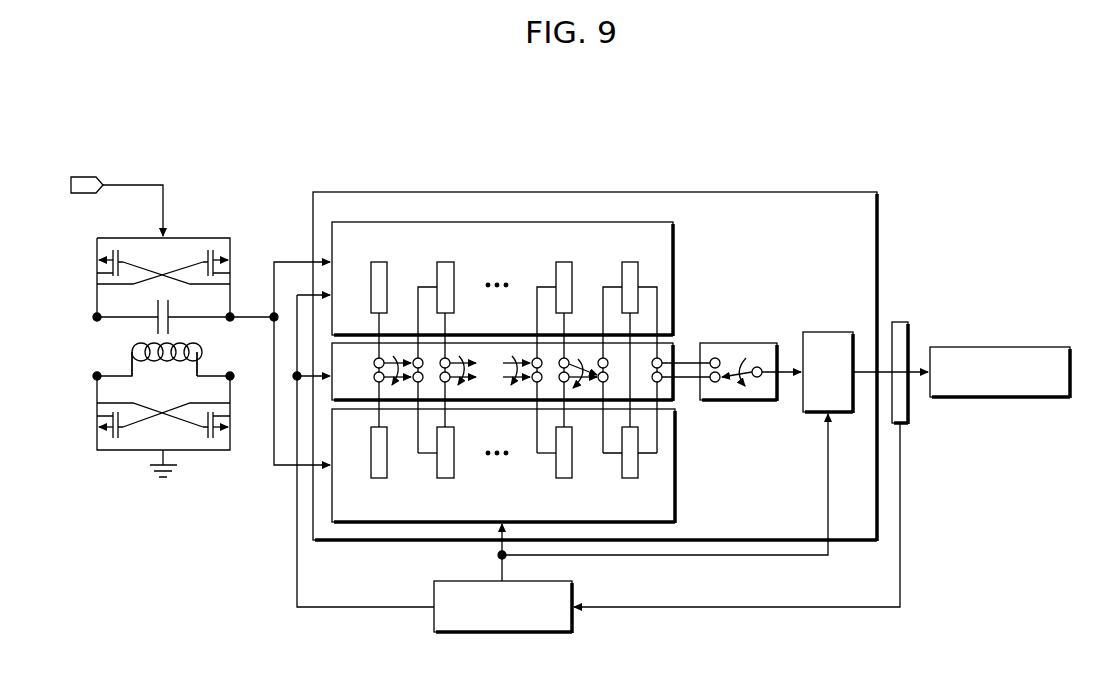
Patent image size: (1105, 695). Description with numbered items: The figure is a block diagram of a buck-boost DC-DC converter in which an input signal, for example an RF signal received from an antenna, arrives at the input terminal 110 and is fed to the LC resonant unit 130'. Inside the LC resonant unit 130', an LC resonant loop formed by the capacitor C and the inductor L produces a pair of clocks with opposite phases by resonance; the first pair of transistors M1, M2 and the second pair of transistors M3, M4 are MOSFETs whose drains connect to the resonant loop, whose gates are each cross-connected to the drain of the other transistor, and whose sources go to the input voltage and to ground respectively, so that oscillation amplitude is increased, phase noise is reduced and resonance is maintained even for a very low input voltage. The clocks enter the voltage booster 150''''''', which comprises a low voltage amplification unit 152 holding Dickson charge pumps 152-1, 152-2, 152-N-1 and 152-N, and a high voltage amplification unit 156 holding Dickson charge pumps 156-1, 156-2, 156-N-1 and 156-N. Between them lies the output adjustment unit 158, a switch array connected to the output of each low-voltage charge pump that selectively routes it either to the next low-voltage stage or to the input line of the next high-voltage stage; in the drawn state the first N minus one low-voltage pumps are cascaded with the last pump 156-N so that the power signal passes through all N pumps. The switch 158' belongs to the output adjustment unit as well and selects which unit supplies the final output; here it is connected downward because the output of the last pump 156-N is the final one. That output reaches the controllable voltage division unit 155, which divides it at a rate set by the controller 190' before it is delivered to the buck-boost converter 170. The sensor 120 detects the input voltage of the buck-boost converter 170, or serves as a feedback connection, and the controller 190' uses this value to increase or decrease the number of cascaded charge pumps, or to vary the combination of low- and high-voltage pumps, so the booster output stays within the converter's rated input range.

The input terminal 110 is at (86, 177).
The LC resonant unit 130' is at (161, 348).
The first pair transistor M1 is at (94, 263).
The first pair transistor M2 is at (229, 263).
The second pair transistor M3 is at (94, 425).
The second pair transistor M4 is at (229, 425).
The capacitor C is at (163, 315).
The inductor L is at (163, 367).
The voltage booster 150''''''' is at (595, 358).
The low voltage amplification unit 152 is at (532, 337).
The Dickson charge pump 152-1 is at (379, 262).
The Dickson charge pump 152-2 is at (445, 262).
The Dickson charge pump 152-N-1 is at (564, 262).
The Dickson charge pump 152-N is at (630, 262).
The output adjustment unit 158 is at (530, 365).
The switch 158' is at (750, 362).
The high voltage amplification unit 156 is at (532, 466).
The Dickson charge pump 156-1 is at (379, 478).
The Dickson charge pump 156-2 is at (445, 478).
The Dickson charge pump 156-N-1 is at (564, 478).
The Dickson charge pump 156-N is at (630, 478).
The controllable voltage division unit 155 is at (826, 333).
The sensor 120 is at (905, 322).
The buck-boost converter 170 is at (1005, 347).
The controller 190' is at (631, 523).